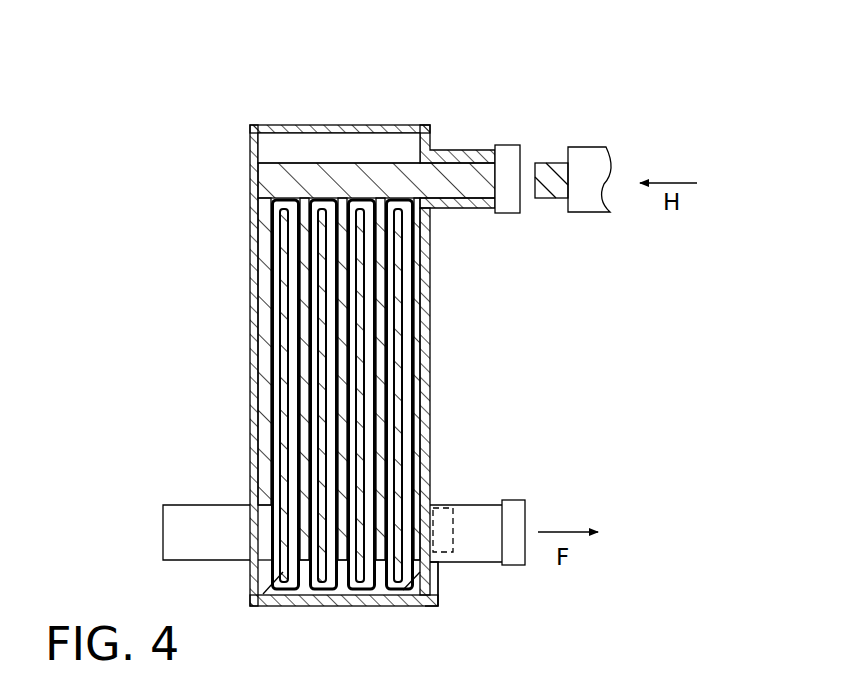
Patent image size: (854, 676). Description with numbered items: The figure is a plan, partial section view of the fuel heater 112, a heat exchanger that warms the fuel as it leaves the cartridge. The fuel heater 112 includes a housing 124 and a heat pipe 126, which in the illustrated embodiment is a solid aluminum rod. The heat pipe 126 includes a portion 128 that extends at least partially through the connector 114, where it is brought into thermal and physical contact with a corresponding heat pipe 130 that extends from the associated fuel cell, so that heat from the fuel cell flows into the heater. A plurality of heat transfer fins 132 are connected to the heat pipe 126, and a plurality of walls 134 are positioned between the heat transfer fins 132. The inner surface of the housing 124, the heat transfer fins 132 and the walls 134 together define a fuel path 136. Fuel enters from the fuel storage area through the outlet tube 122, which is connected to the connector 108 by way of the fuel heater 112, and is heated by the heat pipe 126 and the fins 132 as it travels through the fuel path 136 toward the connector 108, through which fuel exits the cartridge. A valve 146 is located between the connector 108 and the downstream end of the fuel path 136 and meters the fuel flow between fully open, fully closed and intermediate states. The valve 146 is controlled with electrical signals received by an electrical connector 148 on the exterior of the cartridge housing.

The fuel heater 112 is at (388, 92).
The housing 124 is at (266, 125).
The heat pipe 126 is at (285, 155).
The heat transfer fins 132 is at (258, 236).
The heat pipe portion 128 is at (470, 210).
The connector 114 is at (505, 146).
The heat pipe 130 is at (569, 212).
The walls 134 is at (398, 325).
The fuel path 136 is at (302, 598).
The valve 146 is at (447, 506).
The electrical connector 148 is at (442, 590).
The outlet tube 122 is at (213, 505).
The connector 108 is at (514, 566).